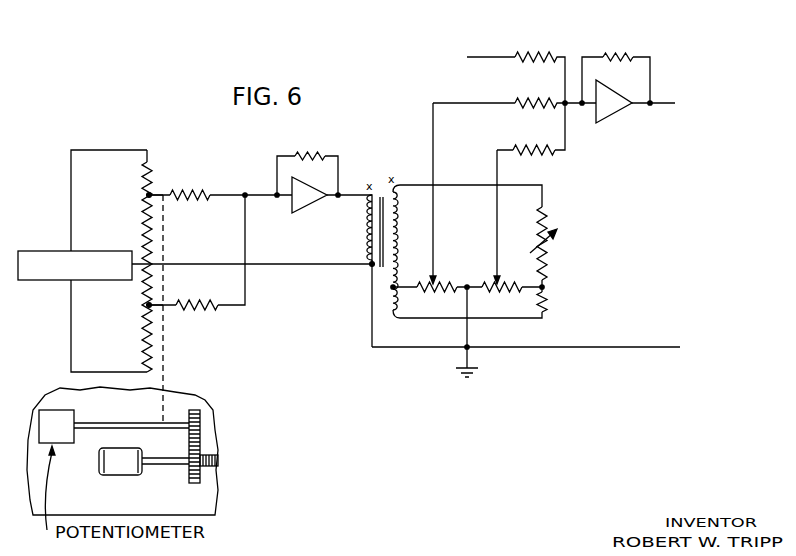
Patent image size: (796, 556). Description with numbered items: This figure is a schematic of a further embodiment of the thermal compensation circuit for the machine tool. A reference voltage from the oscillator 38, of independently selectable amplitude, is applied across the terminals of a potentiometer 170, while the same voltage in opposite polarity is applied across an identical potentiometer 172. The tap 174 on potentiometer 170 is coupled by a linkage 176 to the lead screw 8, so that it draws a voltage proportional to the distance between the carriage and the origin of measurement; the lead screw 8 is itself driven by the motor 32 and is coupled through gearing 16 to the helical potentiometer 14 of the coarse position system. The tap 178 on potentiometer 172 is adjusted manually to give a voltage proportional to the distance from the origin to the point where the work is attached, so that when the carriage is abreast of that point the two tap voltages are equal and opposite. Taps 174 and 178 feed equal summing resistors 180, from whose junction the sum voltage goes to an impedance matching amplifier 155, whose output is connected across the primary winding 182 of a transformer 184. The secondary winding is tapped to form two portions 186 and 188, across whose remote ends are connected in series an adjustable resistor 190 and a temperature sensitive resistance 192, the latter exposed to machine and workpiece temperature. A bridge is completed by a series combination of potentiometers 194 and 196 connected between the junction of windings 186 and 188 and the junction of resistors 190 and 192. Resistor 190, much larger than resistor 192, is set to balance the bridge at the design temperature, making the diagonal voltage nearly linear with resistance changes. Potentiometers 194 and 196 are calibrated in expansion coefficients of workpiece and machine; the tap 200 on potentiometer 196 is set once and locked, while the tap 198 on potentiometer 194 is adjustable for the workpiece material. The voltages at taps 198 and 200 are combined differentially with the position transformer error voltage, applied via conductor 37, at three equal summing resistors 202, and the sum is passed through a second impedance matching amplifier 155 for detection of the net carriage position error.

The oscillator 38 is at (92, 251).
The potentiometer 170 is at (149, 170).
The potentiometer 172 is at (151, 338).
The tap 174 is at (164, 194).
The linkage 176 is at (165, 244).
The tap 178 is at (154, 303).
The summing resistors 180 is at (209, 192).
The impedance matching amplifier 155 is at (297, 207).
The primary winding 182 is at (366, 222).
The transformer 184 is at (372, 265).
The secondary winding portion 186 is at (398, 229).
The secondary winding portion 188 is at (398, 301).
The potentiometer 194 is at (438, 284).
The potentiometer 196 is at (499, 284).
The tap 198 is at (434, 255).
The tap 200 is at (497, 235).
The adjustable resistor 190 is at (546, 243).
The temperature sensitive resistance 192 is at (548, 301).
The conductor 37 is at (467, 57).
The summing resistors 202 is at (532, 55).
The helical potentiometer 14 is at (74, 412).
The gearing 16 is at (200, 416).
The lead screw 8 is at (215, 456).
The motor 32 is at (135, 477).